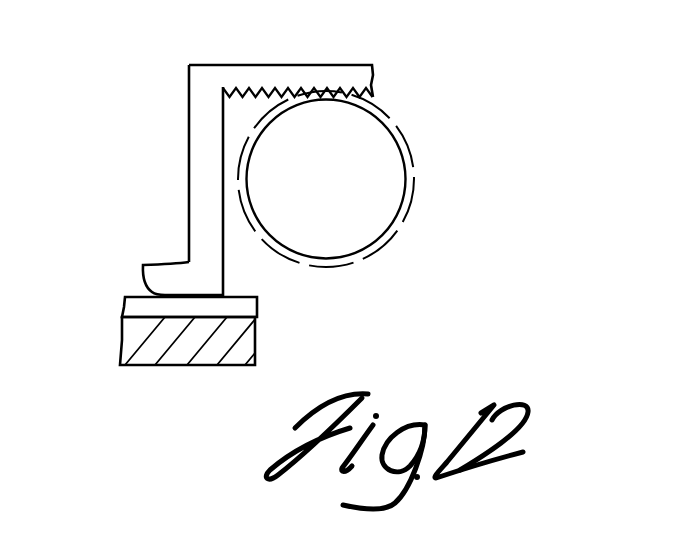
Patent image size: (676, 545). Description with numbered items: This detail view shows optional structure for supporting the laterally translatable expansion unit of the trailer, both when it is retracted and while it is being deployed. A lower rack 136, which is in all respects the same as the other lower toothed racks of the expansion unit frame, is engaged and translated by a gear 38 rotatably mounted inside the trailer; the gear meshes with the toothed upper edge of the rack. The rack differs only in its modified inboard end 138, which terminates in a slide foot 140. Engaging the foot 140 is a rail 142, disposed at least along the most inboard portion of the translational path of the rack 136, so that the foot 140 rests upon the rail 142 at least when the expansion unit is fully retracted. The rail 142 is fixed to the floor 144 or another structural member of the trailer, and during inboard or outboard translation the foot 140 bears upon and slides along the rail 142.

The gear 38 is at (393, 229).
The lower rack 136 is at (338, 78).
The modified inboard end 138 is at (200, 153).
The slide foot 140 is at (178, 278).
The rail 142 is at (125, 304).
The floor 144 is at (245, 342).